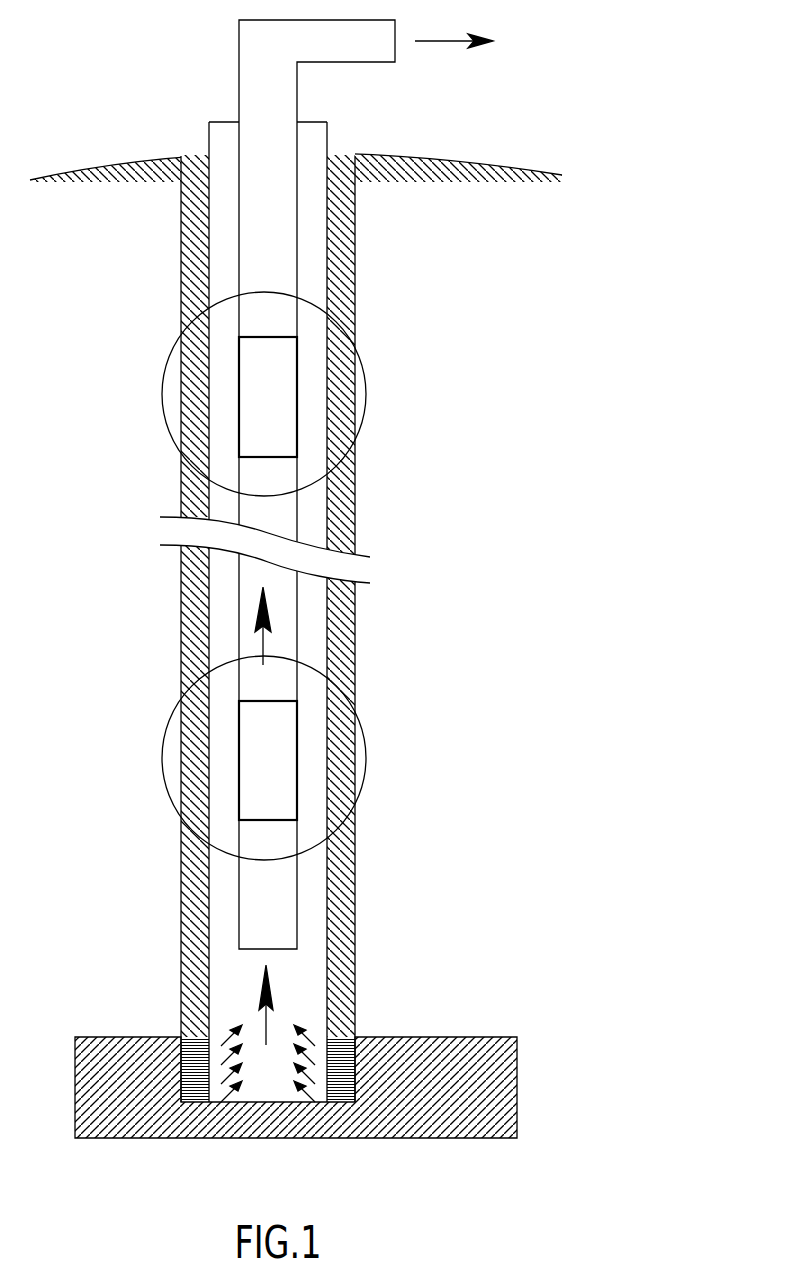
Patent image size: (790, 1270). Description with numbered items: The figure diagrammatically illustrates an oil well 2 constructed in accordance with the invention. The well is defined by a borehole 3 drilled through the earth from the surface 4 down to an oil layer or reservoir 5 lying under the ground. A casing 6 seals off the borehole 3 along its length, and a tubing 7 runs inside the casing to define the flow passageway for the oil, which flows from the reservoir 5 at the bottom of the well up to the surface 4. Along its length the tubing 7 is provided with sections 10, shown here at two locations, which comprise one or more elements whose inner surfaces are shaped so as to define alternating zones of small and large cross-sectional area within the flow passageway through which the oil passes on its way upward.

The oil well 2 is at (185, 248).
The borehole 3 is at (310, 250).
The surface 4 is at (353, 155).
The oil layer or reservoir 5 is at (432, 1077).
The casing 6 is at (209, 601).
The tubing 7 is at (239, 215).
The sections 10 is at (367, 408).